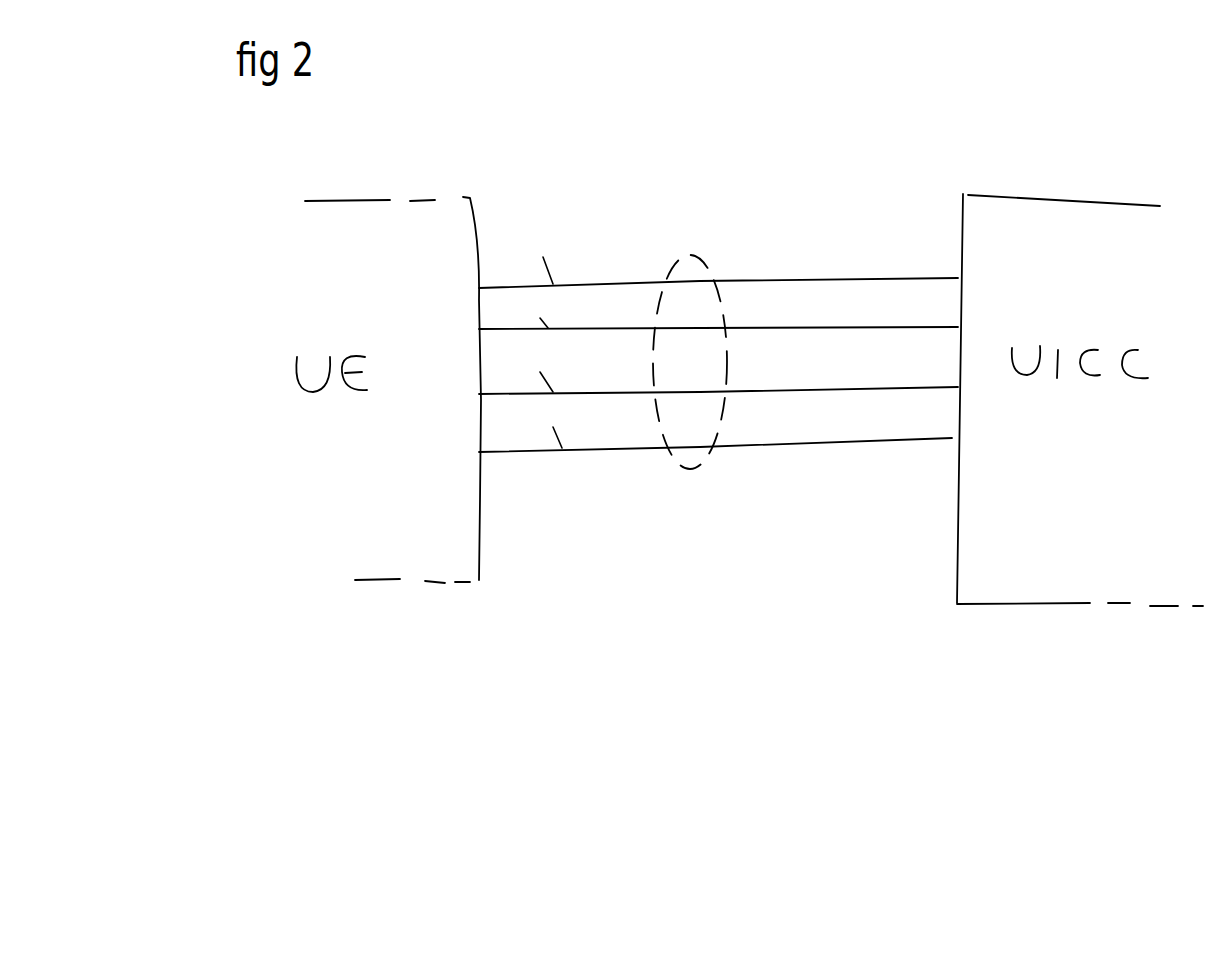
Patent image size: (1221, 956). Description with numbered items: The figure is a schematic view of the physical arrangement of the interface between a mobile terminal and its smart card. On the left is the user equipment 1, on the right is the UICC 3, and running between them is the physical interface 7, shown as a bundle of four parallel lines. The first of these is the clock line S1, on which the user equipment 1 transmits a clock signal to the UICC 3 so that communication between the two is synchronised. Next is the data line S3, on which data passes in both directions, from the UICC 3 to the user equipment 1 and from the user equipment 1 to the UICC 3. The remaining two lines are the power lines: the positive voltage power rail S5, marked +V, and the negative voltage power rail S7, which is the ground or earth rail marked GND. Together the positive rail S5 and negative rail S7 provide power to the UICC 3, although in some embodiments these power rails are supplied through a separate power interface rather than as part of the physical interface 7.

The user equipment 1 is at (370, 207).
The UICC 3 is at (1070, 573).
The physical interface 7 is at (698, 465).
The clock line S1 is at (718, 255).
The data line S3 is at (718, 310).
The positive voltage power rail S5 is at (718, 370).
The negative voltage power rail S7 is at (715, 427).